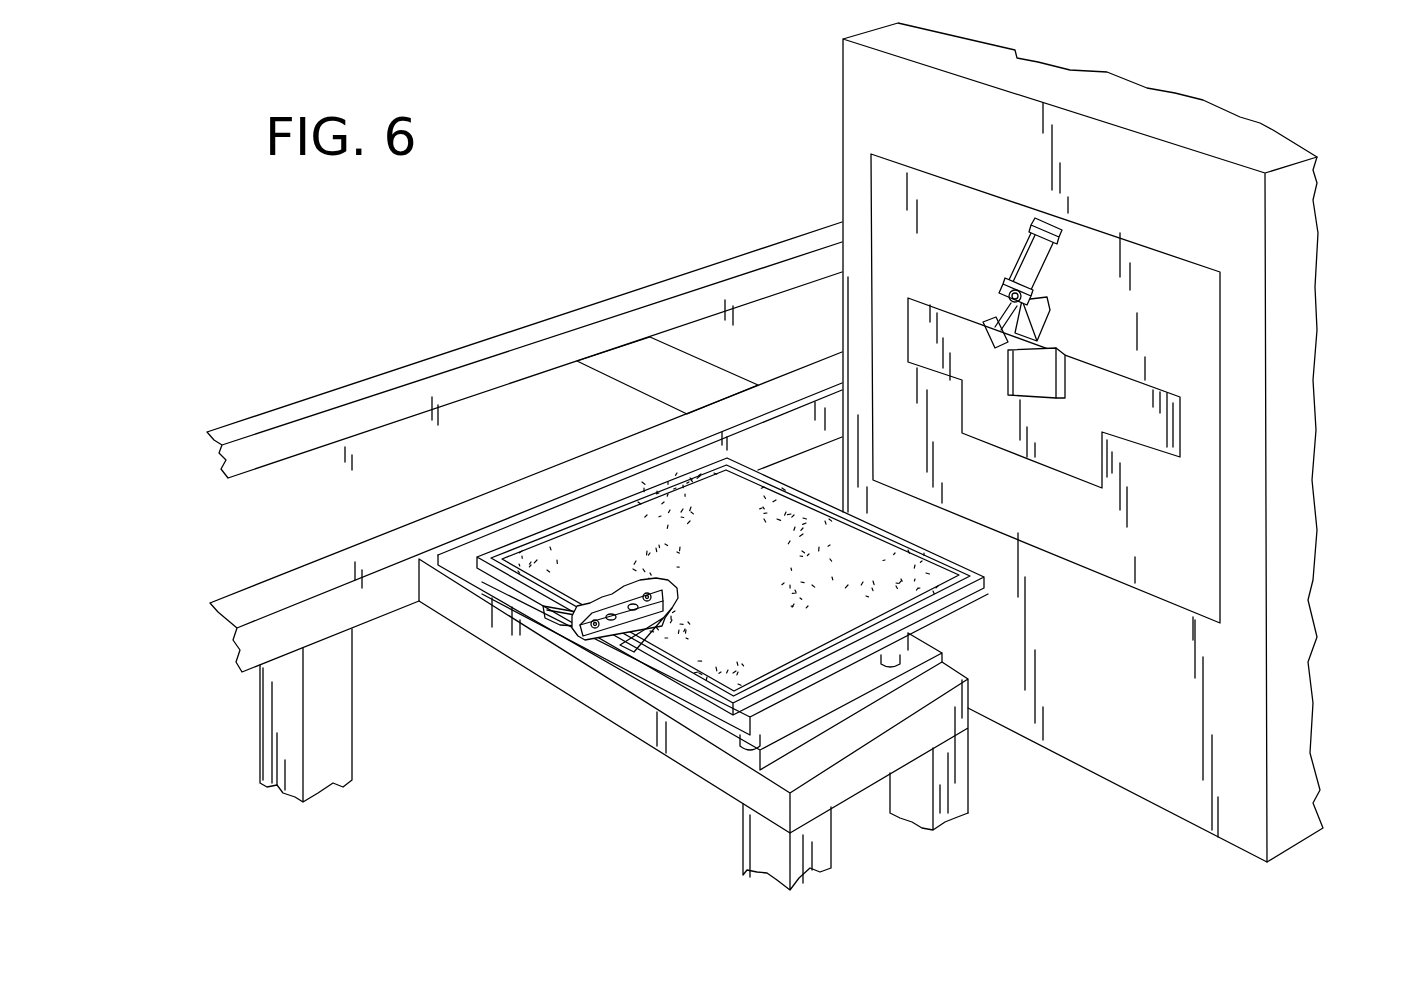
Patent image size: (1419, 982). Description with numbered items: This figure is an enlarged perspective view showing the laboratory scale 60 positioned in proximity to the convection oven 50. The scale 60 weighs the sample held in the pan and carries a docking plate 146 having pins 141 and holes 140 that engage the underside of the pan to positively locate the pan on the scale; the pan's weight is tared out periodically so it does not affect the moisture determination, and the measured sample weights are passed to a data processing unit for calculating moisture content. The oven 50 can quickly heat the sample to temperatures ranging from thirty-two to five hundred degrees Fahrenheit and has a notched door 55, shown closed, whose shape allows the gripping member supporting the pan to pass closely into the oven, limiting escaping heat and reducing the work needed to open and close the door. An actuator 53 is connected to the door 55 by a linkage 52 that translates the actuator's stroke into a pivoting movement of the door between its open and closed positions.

The oven 50 is at (1287, 247).
The linkage 52 is at (1033, 338).
The actuator 53 is at (1033, 257).
The notched door 55 is at (1141, 428).
The scale 60 is at (905, 577).
The holes 140 is at (654, 617).
The pins 141 is at (652, 581).
The docking plate 146 is at (623, 643).